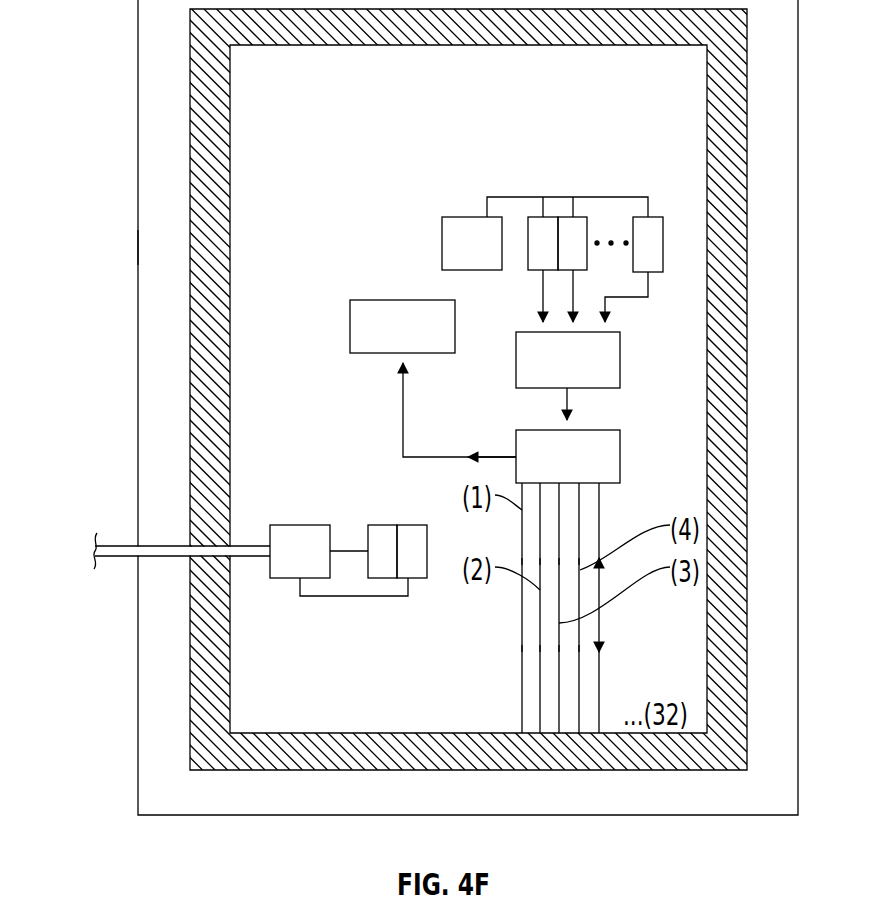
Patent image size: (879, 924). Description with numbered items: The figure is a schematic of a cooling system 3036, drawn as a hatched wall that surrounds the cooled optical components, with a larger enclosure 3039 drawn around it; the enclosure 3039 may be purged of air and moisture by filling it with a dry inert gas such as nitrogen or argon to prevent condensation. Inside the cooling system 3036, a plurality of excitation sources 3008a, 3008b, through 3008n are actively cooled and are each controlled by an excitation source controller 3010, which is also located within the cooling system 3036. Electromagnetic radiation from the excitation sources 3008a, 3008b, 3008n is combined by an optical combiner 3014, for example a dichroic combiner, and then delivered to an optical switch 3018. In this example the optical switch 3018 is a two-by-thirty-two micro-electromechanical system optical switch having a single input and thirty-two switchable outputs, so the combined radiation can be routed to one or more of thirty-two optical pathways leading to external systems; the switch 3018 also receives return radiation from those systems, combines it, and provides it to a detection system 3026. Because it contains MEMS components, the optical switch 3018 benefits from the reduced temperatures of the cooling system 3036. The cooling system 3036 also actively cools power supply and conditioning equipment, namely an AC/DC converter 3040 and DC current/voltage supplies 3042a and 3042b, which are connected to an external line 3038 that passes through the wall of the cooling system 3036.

The enclosure 3039 is at (138, 247).
The cooling system 3036 is at (213, 468).
The cable 3038 is at (121, 558).
The excitation source controller 3010 is at (442, 245).
The excitation source 3008a is at (537, 217).
The excitation source 3008b is at (578, 217).
The excitation source 3008n is at (650, 217).
The optical combiner 3014 is at (600, 388).
The optical switch 3018 is at (548, 430).
The detection system 3026 is at (387, 300).
The AC/DC converter 3040 is at (288, 578).
The DC current/voltage supply 3042a is at (384, 525).
The DC current/voltage supply 3042b is at (418, 578).